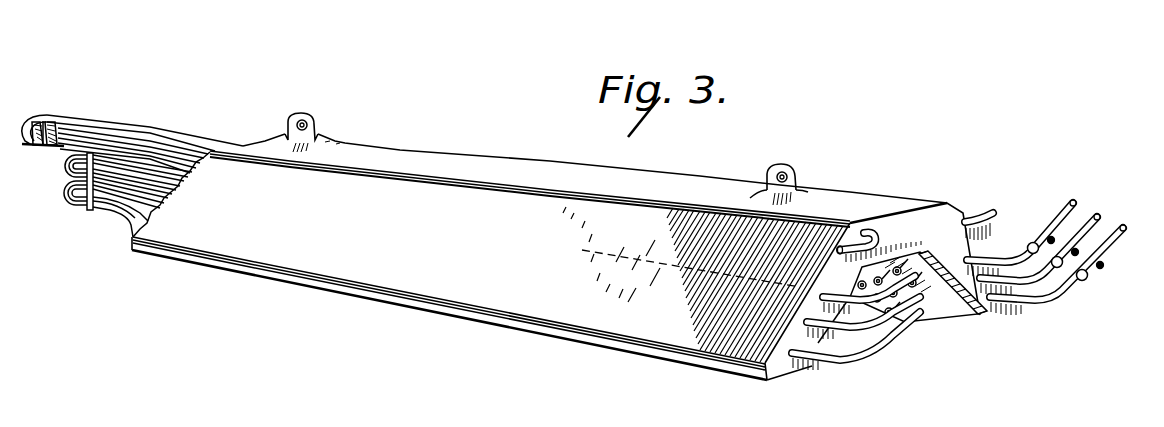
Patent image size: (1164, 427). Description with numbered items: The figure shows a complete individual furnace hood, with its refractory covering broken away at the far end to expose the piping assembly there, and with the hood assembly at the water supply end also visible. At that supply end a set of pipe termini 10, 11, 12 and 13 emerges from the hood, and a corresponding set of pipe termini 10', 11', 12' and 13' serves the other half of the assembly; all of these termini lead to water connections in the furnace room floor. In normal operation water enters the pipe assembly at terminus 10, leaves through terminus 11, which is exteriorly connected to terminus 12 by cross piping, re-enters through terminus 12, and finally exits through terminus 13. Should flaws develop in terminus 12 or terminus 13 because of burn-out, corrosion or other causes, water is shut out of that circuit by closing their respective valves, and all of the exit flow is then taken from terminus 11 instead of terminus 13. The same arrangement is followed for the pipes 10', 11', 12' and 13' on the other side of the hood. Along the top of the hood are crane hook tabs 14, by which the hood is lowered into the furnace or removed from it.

The pipe terminus 10 is at (880, 209).
The pipe terminus 10' is at (991, 205).
The pipe terminus 11 is at (875, 309).
The pipe terminus 12 is at (863, 335).
The pipe terminus 13 is at (856, 355).
The pipe terminus 11' is at (1021, 274).
The pipe terminus 12' is at (1040, 278).
The pipe terminus 13' is at (1065, 270).
The crane hook tabs 14 is at (316, 114).